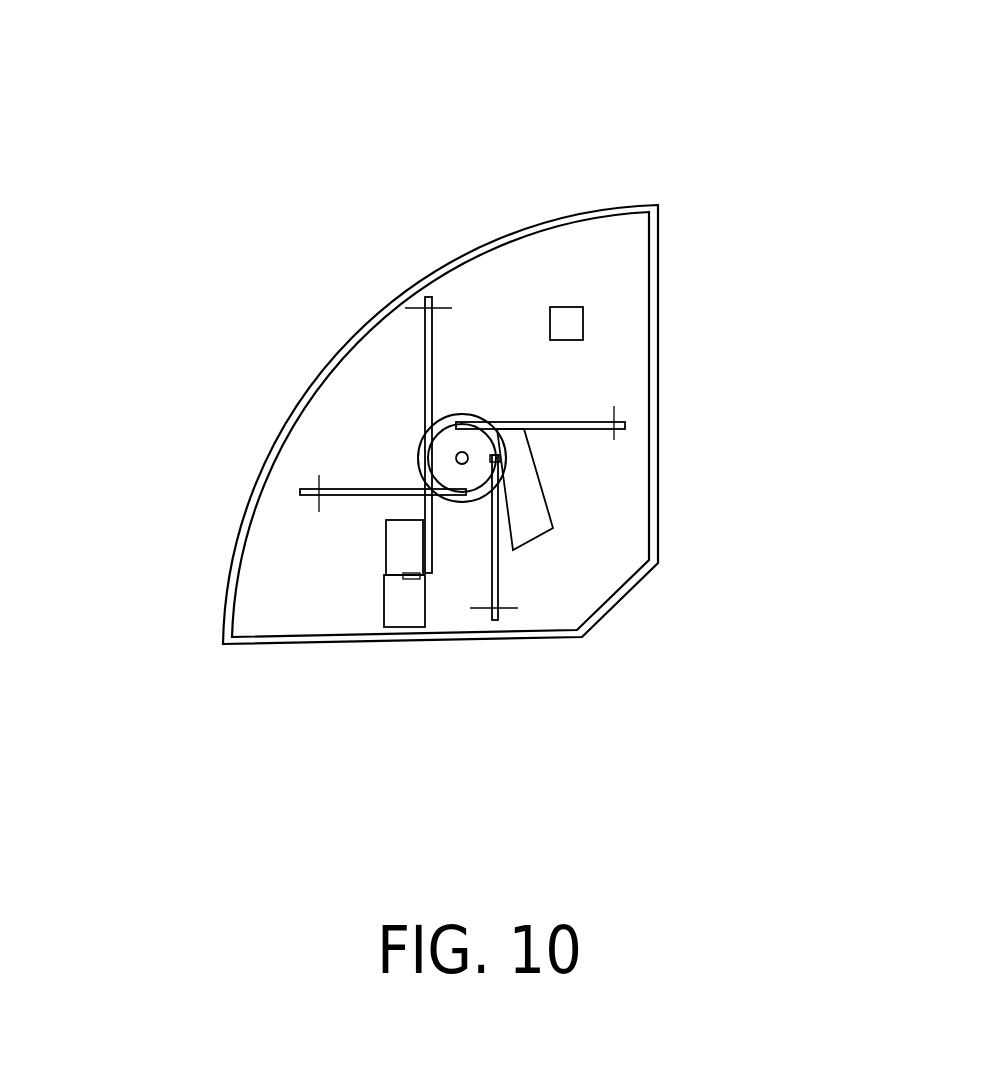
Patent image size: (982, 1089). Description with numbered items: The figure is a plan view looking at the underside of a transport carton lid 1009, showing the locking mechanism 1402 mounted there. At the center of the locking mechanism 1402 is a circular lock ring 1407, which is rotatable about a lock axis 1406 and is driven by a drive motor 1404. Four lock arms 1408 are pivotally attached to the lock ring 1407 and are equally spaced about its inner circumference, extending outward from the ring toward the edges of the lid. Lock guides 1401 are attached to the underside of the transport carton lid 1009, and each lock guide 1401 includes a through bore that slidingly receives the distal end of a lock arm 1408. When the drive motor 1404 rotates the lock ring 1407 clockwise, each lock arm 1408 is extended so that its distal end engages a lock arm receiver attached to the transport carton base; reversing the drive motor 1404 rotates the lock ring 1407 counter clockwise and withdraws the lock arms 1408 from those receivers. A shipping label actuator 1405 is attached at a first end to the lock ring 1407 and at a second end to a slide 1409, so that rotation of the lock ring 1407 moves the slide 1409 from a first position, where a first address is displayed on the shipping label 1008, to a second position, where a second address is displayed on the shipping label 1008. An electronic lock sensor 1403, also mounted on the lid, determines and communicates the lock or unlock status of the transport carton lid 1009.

The transport carton lid 1009 is at (658, 229).
The shipping label 1008 is at (403, 608).
The lock guides 1401 is at (305, 503).
The locking mechanism 1402 is at (478, 459).
The electronic lock sensor 1403 is at (573, 327).
The drive motor 1404 is at (525, 463).
The shipping label actuator 1405 is at (433, 563).
The lock axis 1406 is at (450, 457).
The lock ring 1407 is at (417, 437).
The lock arms 1408 is at (420, 360).
The slide 1409 is at (375, 557).